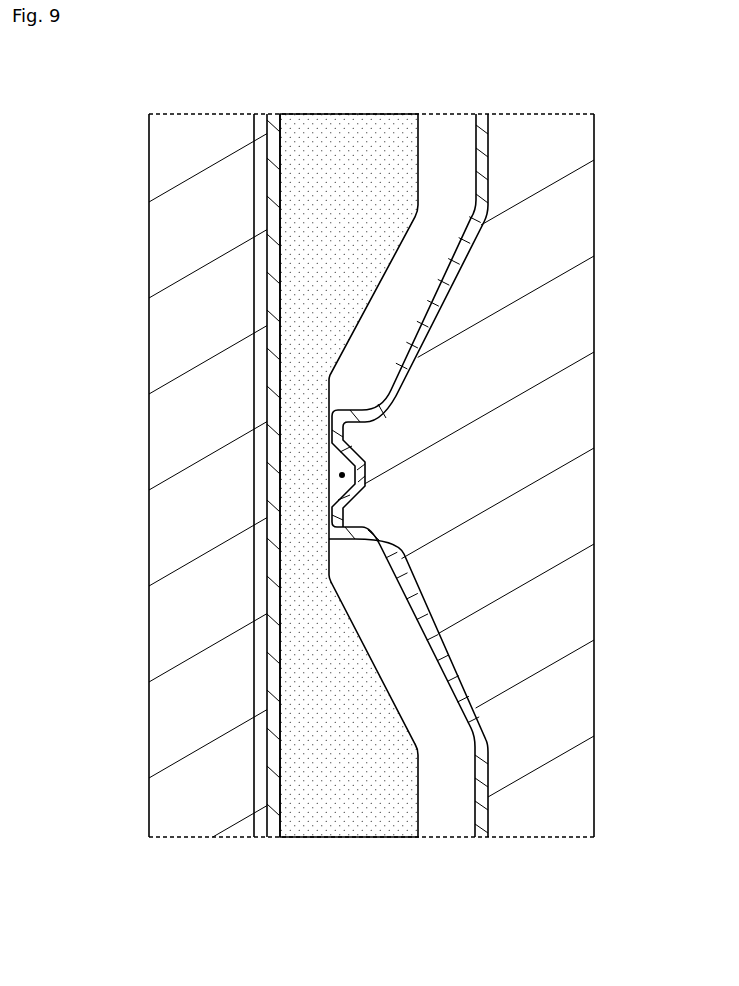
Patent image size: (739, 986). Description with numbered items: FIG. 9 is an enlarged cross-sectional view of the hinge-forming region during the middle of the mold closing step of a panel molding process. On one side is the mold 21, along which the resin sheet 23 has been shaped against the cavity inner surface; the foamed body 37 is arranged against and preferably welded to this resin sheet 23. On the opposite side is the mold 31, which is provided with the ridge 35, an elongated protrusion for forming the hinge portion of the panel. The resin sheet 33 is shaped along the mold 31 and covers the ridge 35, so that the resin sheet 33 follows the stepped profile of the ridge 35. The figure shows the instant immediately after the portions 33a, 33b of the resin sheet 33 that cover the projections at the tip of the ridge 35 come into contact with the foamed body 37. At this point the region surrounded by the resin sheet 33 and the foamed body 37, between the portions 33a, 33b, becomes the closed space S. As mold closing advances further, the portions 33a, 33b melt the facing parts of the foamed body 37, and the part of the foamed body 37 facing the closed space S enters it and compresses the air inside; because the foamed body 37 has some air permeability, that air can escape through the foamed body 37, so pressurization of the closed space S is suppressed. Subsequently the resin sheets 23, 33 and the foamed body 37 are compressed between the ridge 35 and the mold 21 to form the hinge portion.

The mold 21 is at (152, 345).
The resin sheet 23 is at (275, 825).
The mold 31 is at (583, 318).
The resin sheet 33 is at (415, 522).
The portion of the resin sheet 33a is at (330, 416).
The portion of the resin sheet 33b is at (331, 526).
The ridge 35 is at (442, 489).
The foamed body 37 is at (339, 208).
The closed space S is at (342, 475).